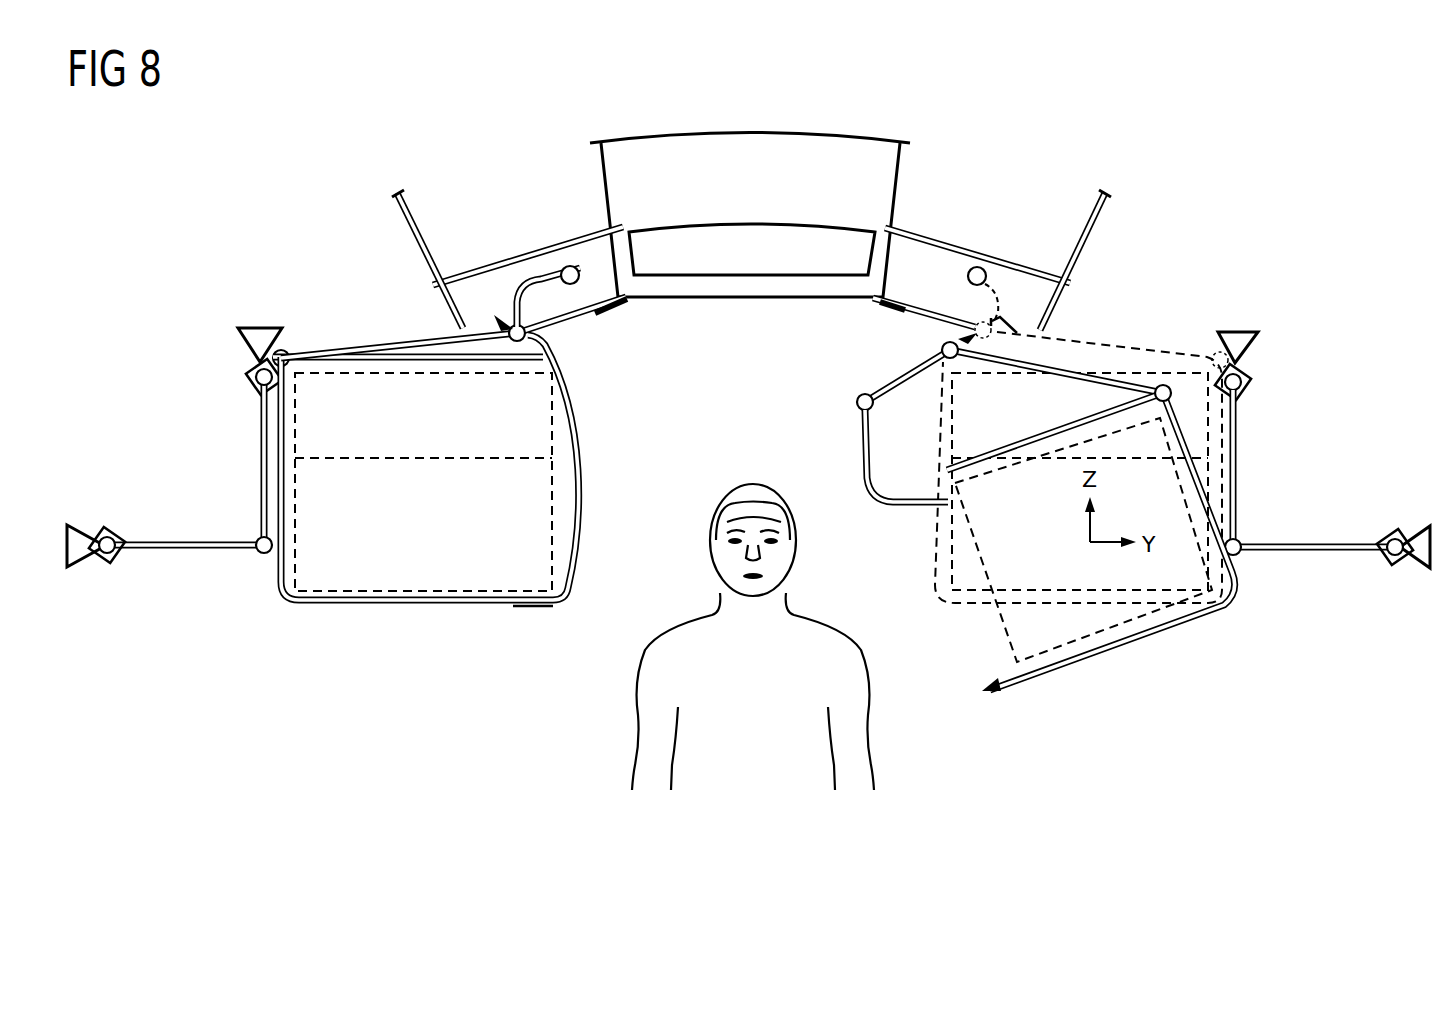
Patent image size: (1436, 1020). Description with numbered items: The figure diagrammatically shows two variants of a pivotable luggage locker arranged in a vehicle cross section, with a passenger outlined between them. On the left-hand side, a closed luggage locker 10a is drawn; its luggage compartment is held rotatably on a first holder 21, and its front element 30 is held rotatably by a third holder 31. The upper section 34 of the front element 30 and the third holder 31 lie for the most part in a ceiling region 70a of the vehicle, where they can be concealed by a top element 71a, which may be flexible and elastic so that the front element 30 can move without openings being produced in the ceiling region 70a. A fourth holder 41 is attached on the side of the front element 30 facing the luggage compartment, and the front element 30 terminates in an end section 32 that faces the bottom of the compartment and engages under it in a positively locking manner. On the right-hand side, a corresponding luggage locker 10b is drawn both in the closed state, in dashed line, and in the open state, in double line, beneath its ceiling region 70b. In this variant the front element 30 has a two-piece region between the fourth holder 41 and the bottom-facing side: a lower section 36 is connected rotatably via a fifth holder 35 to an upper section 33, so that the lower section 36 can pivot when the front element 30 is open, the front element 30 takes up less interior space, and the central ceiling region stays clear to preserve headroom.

The closed luggage locker 10a is at (320, 638).
The luggage locker 10b is at (1290, 618).
The first holder 21 is at (1238, 524).
The front element 30 is at (592, 497).
The third holder 31 is at (533, 277).
The end section 32 is at (910, 507).
The upper section of the front element 33 is at (575, 407).
The upper section of the front element 34 is at (514, 291).
The fifth holder 35 is at (918, 362).
The lower section of the front element 36 is at (845, 400).
The fourth holder 41 is at (495, 265).
The ceiling region 70a is at (449, 293).
The ceiling region 70b is at (1043, 258).
The top element 71a is at (610, 293).